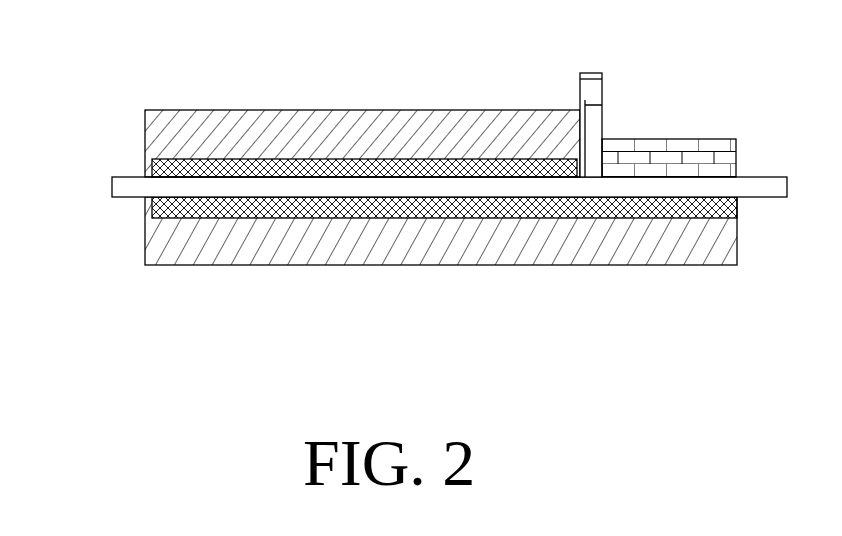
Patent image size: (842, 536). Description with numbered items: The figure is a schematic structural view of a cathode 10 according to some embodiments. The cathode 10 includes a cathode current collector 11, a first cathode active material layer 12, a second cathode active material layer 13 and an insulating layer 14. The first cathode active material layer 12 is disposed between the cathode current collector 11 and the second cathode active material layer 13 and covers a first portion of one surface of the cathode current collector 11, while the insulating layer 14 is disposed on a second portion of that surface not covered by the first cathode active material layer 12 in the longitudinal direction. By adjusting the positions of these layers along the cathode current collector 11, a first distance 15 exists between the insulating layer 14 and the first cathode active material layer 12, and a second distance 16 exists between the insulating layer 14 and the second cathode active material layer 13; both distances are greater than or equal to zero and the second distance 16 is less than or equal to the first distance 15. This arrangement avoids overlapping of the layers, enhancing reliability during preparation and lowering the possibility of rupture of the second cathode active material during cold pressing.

The cathode 10 is at (482, 281).
The cathode current collector 11 is at (147, 194).
The first cathode active material layer 12 is at (395, 168).
The second cathode active material layer 13 is at (265, 142).
The insulating layer 14 is at (692, 162).
The first distance 15 is at (603, 79).
The second distance 16 is at (603, 106).